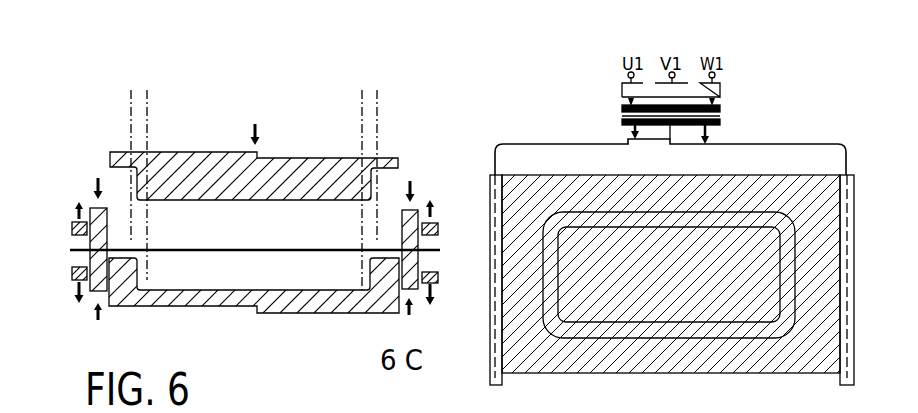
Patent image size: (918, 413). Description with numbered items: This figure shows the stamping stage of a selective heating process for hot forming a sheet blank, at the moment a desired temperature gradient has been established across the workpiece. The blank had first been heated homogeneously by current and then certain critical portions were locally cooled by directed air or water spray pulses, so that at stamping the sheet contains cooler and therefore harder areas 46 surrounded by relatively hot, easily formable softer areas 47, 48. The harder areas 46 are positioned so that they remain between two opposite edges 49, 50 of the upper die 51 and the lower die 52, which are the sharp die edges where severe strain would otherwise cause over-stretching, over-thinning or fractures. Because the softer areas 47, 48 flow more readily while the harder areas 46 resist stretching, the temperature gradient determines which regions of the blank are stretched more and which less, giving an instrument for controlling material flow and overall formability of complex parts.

The harder areas 46 is at (368, 249).
The softer area 47 is at (386, 250).
The softer area 48 is at (299, 250).
The edge of upper die 49 is at (148, 204).
The edge of lower die 50 is at (138, 264).
The upper die 51 is at (190, 157).
The lower die 52 is at (188, 304).